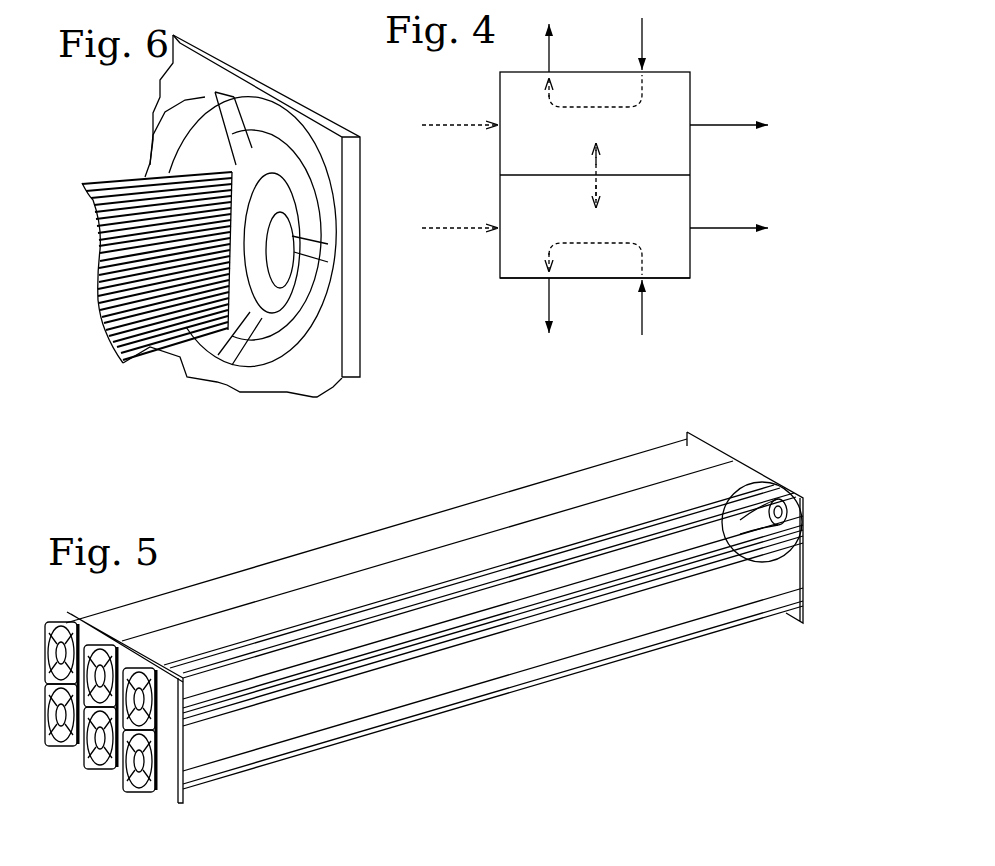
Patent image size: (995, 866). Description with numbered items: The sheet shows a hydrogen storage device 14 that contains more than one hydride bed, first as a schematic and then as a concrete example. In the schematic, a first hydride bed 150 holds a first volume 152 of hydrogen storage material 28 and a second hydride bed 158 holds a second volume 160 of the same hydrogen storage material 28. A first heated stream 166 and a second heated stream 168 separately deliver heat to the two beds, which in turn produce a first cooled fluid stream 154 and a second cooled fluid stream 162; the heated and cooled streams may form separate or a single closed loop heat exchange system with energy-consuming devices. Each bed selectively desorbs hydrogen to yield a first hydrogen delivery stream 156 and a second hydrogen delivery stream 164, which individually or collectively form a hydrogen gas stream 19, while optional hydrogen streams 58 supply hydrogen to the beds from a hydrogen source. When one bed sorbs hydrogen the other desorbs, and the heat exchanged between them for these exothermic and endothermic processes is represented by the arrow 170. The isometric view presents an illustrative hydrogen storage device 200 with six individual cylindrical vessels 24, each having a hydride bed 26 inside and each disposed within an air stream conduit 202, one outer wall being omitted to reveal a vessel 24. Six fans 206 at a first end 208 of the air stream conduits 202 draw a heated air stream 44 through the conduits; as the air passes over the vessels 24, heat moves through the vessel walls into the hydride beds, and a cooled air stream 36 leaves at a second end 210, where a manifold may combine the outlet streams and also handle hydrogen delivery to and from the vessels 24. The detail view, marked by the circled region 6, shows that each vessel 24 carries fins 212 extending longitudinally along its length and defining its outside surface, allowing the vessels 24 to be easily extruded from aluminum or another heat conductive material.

In FIG. 5, the detail view of Fig. 6 is at (802, 553).
In FIG. 4, the hydrogen storage device 14 is at (667, 66).
In FIG. 5, the hydrogen storage device 14 is at (766, 405).
In FIG. 4, the hydrogen gas stream 19 is at (701, 128).
In FIG. 6, the cylindrical vessel 24 is at (138, 176).
In FIG. 5, the cylindrical vessel 24 is at (706, 520).
In FIG. 5, the hydride bed 26 is at (673, 553).
In FIG. 4, the hydrogen storage material 28 is at (672, 118).
In FIG. 5, the cooled air stream 36 is at (797, 457).
In FIG. 5, the heated air stream 44 is at (83, 772).
In FIG. 4, the hydrogen stream 58 is at (458, 226).
In FIG. 4, the first hydride bed 150 is at (691, 84).
In FIG. 4, the first volume of hydrogen storage material 152 is at (672, 80).
In FIG. 4, the first cooled fluid stream 154 is at (546, 50).
In FIG. 4, the first hydrogen delivery stream 156 is at (742, 128).
In FIG. 4, the second hydride bed 158 is at (692, 263).
In FIG. 4, the second volume of hydrogen storage material 160 is at (665, 264).
In FIG. 4, the second cooled fluid stream 162 is at (545, 303).
In FIG. 4, the second hydrogen delivery stream 164 is at (742, 224).
In FIG. 4, the first heated stream 166 is at (638, 48).
In FIG. 4, the second heated stream 168 is at (640, 308).
In FIG. 4, the arrow representing heat exchange 170 is at (590, 164).
In FIG. 5, the hydrogen storage device 200 is at (708, 411).
In FIG. 5, the air stream conduit 202 is at (495, 567).
In FIG. 5, the fan 206 is at (37, 670).
In FIG. 5, the first end 208 is at (167, 803).
In FIG. 6, the second end 210 is at (282, 400).
In FIG. 5, the second end 210 is at (791, 627).
In FIG. 6, the fin 212 is at (249, 219).